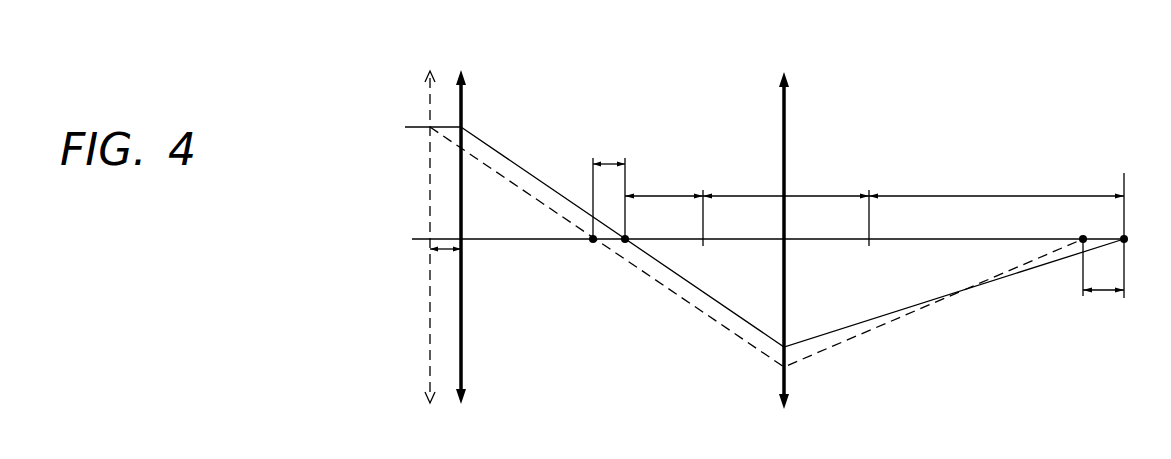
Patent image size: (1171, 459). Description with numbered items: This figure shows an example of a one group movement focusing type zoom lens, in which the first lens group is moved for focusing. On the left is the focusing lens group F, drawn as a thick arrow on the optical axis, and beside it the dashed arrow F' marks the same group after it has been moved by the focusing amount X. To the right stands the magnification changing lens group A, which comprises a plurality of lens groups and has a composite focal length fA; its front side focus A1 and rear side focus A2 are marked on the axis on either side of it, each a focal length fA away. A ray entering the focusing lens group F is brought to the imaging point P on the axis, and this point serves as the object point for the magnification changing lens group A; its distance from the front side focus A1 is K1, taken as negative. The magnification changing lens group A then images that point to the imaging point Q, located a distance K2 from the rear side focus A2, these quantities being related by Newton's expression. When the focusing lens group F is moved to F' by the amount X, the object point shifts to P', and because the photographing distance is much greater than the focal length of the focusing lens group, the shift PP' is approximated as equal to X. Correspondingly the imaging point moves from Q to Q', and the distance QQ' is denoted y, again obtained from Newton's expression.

The focusing lens group F is at (459, 223).
The moved focusing lens group F' is at (426, 223).
The magnification changing lens group A is at (783, 228).
The object point P is at (625, 234).
The moved object point P' is at (587, 234).
The movement amount of focusing lens group X is at (527, 212).
The distance from front side focus to object point K1 is at (664, 185).
The composite focal length of magnification changing lens group fA is at (786, 185).
The distance from rear side focus to imaging point K2 is at (996, 185).
The front side focus A1 is at (706, 233).
The rear side focus A2 is at (869, 233).
The imaging point Q is at (1132, 235).
The moved imaging point Q' is at (1085, 253).
The shift of imaging point y is at (1103, 278).